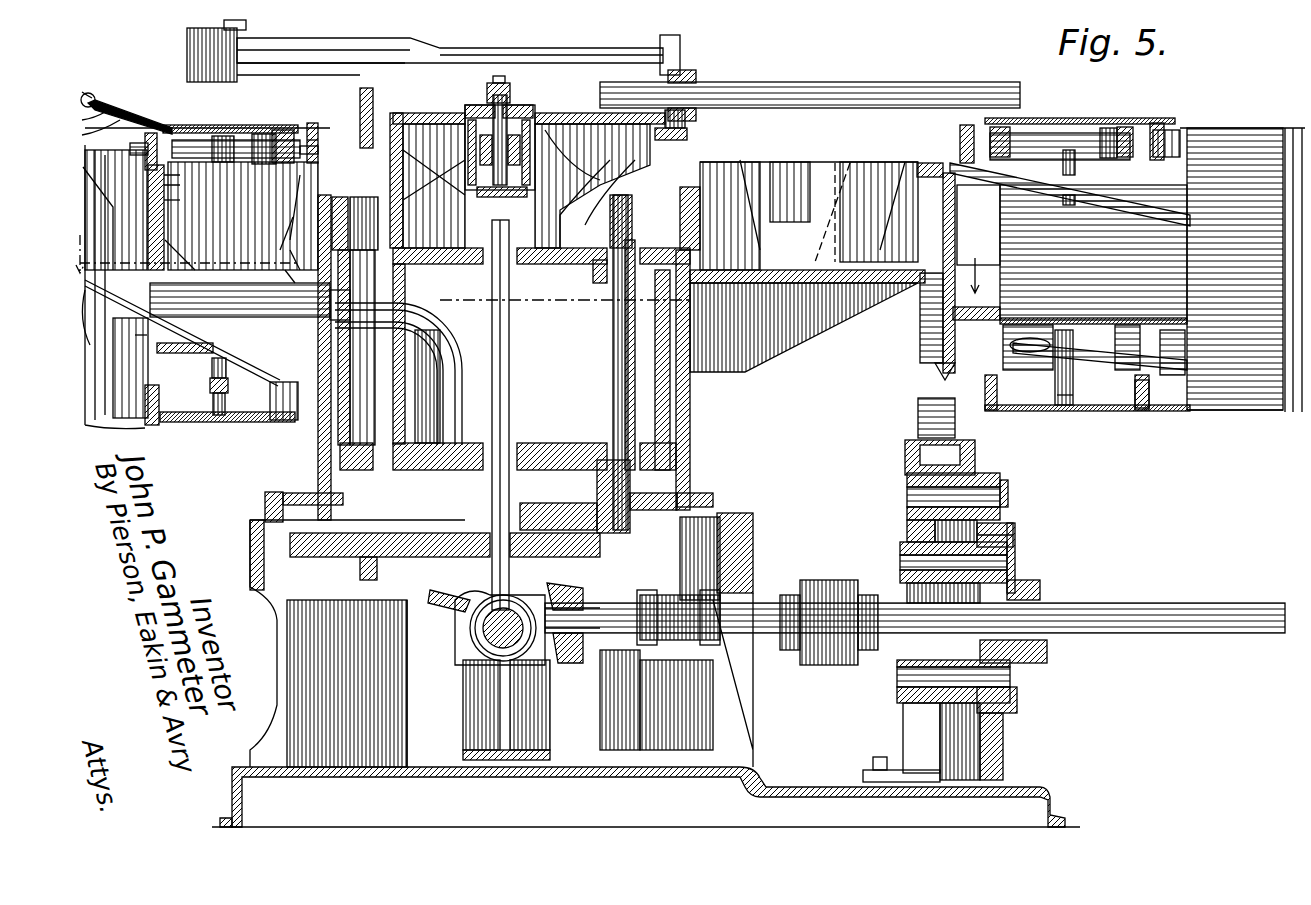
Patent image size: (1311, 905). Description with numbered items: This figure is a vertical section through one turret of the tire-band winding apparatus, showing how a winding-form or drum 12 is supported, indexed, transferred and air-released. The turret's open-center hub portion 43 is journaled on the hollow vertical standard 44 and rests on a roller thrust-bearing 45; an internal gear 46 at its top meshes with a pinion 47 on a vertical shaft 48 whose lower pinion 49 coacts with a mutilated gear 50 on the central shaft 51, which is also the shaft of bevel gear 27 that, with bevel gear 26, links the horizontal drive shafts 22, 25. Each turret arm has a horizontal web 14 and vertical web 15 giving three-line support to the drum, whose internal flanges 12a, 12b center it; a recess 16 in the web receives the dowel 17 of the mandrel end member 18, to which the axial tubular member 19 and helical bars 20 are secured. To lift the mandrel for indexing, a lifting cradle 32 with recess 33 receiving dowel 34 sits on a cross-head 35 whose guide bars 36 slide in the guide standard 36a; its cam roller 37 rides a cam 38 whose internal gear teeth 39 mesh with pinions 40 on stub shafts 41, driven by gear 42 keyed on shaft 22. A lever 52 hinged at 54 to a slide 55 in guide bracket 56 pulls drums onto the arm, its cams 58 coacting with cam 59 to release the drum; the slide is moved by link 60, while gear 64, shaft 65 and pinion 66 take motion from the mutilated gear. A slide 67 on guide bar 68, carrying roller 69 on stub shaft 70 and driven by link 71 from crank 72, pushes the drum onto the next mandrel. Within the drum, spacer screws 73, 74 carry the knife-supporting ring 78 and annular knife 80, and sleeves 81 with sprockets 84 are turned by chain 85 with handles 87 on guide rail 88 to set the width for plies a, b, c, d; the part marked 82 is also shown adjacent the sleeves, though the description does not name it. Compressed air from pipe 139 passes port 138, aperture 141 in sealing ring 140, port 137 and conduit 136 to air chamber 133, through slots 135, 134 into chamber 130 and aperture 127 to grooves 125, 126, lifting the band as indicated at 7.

The ply a is at (95, 132).
The ply b is at (87, 121).
The ply c is at (82, 103).
The ply d is at (81, 89).
The direction arrow / cutting edge 7 is at (536, 262).
The winding-form or drum 12 is at (235, 425).
The internal flange 12a is at (1015, 390).
The internal flange 12b is at (1135, 405).
The horizontal web 14 is at (100, 305).
The vertical web 15 is at (293, 217).
The recess 16 is at (135, 337).
The dowel 17 is at (900, 298).
The end member 18 is at (925, 300).
The axial tubular member 19 is at (1072, 254).
The helical bar 20 is at (1070, 185).
The shaft 22 is at (1115, 603).
The shaft 25 is at (475, 630).
The bevel gear 26 is at (565, 663).
The bevel gear 27 is at (447, 602).
The lifting cradle 32 is at (918, 413).
The recess 33 is at (920, 442).
The dowel 34 is at (935, 370).
The cross-head 35 is at (907, 485).
The guide bar 36 is at (943, 585).
The guide standard 36a is at (917, 740).
The cam roller 37 is at (1003, 480).
The cam 38 is at (1013, 528).
The internal gear teeth 39 is at (1013, 542).
The pinion 40 is at (1015, 563).
The stub shaft 41 is at (900, 563).
The gear 42 is at (1047, 652).
The hub portion 43 is at (688, 447).
The standard 44 is at (688, 400).
The roller thrust-bearing 45 is at (700, 493).
The internal gear 46 is at (340, 200).
The pinion 47 is at (630, 200).
The vertical shaft 48 is at (613, 397).
The pinion 49 is at (632, 525).
The mutilated gear 50 is at (600, 505).
The shaft 51 is at (503, 437).
The lever 52 is at (555, 130).
The hinge 54 is at (545, 113).
The slide 55 is at (487, 95).
The guide bracket 56 is at (468, 118).
The cam 58 is at (430, 170).
The cam 59 is at (220, 245).
The link 60 is at (500, 88).
The gear 64 is at (390, 596).
The shaft 65 is at (390, 383).
The pinion 66 is at (318, 482).
The slide 67 is at (705, 72).
The horizontal guide bar 68 is at (848, 84).
The roller 69 is at (687, 134).
The vertical stub shaft 70 is at (668, 140).
The link 71 is at (600, 52).
The crank 72 is at (315, 70).
The spacer screw 73 is at (305, 146).
The spacer screw 74 is at (140, 128).
The knife-supporting ring 78 is at (318, 150).
The annular knife 80 is at (318, 128).
The sleeve 81 is at (200, 140).
The collar 82 is at (262, 134).
The sprocket 84 is at (225, 136).
The sprocket-chain 85 is at (213, 405).
The handle 87 is at (212, 362).
The arcuate guide rail 88 is at (210, 384).
The circumferential groove 125 is at (165, 125).
The circumferential groove 126 is at (190, 128).
The aperture 127 is at (165, 165).
The arcuate chamber 130 is at (133, 150).
The air chamber 133 is at (200, 262).
The arcuate slot 134 is at (168, 180).
The arcuate slot 135 is at (168, 195).
The conduit 136 is at (765, 372).
The port 137 is at (290, 275).
The port 138 is at (335, 300).
The stationary pipe 139 is at (450, 413).
The friction-reducing and sealing ring 140 is at (295, 262).
The aperture 141 is at (235, 425).